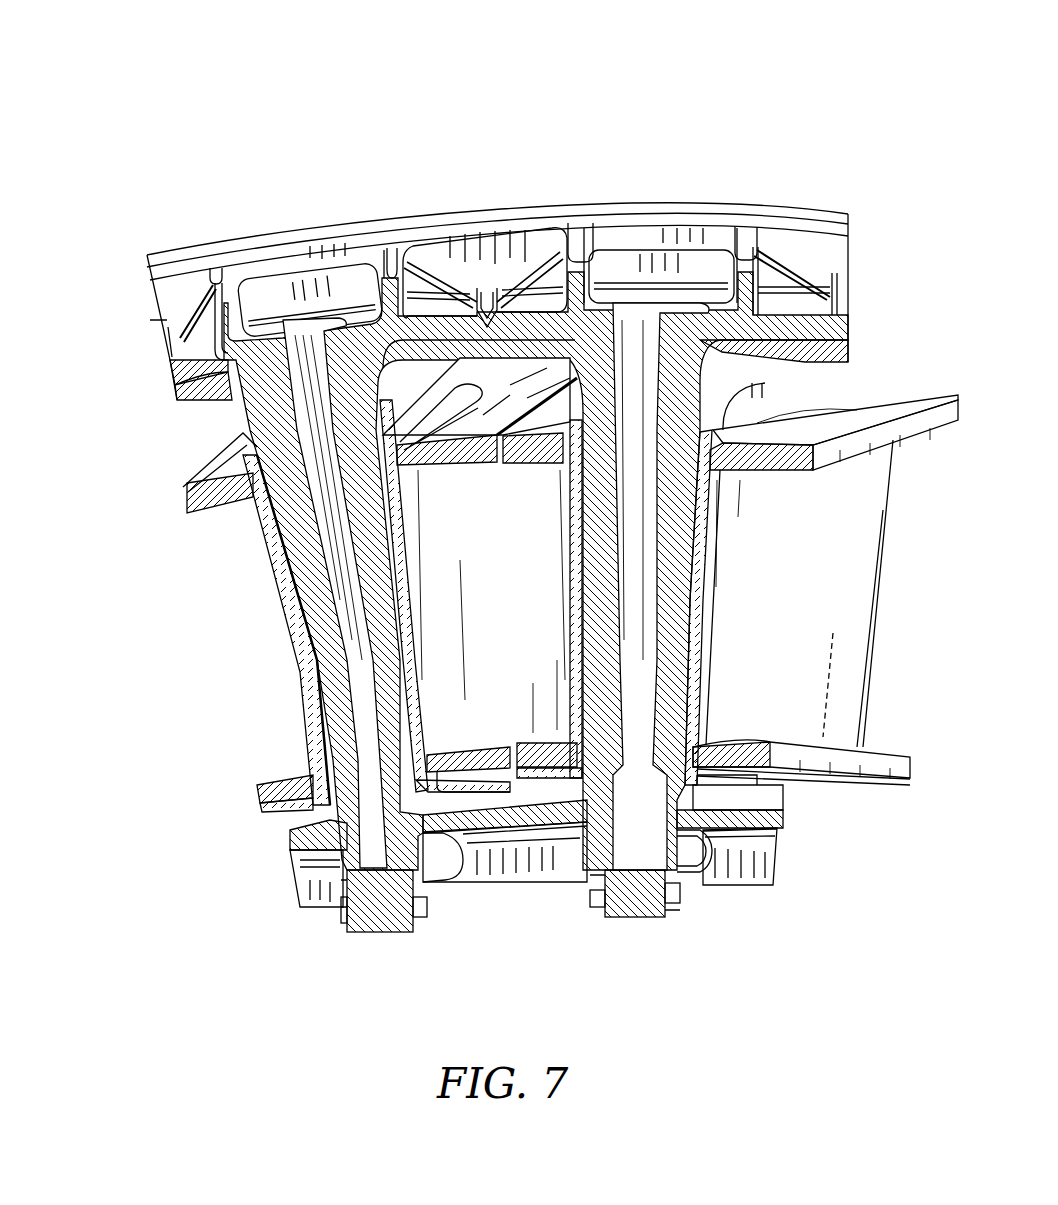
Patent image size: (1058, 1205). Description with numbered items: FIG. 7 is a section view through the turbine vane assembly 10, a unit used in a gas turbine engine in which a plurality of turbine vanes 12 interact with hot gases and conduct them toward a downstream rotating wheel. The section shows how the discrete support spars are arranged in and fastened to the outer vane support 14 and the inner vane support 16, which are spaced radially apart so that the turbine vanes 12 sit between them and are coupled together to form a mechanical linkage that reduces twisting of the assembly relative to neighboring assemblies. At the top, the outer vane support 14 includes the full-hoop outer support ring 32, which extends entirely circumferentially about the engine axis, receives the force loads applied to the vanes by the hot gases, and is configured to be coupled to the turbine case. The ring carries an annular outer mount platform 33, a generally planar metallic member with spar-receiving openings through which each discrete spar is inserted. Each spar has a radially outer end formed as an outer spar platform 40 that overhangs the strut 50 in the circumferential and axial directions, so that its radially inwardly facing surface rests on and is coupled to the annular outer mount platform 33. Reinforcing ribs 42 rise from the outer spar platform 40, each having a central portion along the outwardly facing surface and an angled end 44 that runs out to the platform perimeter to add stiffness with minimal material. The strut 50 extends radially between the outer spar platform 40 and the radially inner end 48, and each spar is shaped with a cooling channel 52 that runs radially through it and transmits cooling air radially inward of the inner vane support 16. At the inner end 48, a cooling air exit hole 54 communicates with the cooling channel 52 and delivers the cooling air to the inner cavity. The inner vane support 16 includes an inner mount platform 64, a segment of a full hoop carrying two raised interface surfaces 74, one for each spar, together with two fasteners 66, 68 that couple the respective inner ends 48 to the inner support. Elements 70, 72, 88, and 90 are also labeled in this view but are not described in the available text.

The turbine vane assembly 10 is at (138, 122).
The turbine vane 12 is at (160, 600).
The outer vane support 14 is at (190, 227).
The inner vane support 16 is at (275, 852).
The full-hoop outer support ring 32 is at (147, 247).
The annular outer mount platform 33 is at (175, 402).
The outer spar platform 40 is at (165, 358).
The reinforcing rib 42 is at (330, 250).
The angled end 44 is at (190, 295).
The radially inner end 48 is at (343, 882).
The strut 50 is at (287, 621).
The cooling channel 52 is at (300, 353).
The cooling air exit hole 54 is at (442, 893).
The inner mount platform 64 is at (288, 876).
The fastener 66 is at (352, 947).
The fastener 68 is at (611, 928).
The washer 70 is at (345, 900).
The inner flange 72 is at (583, 860).
The raised interface surface 74 is at (313, 832).
The seal 88 is at (450, 897).
The retention pin 90 is at (345, 917).